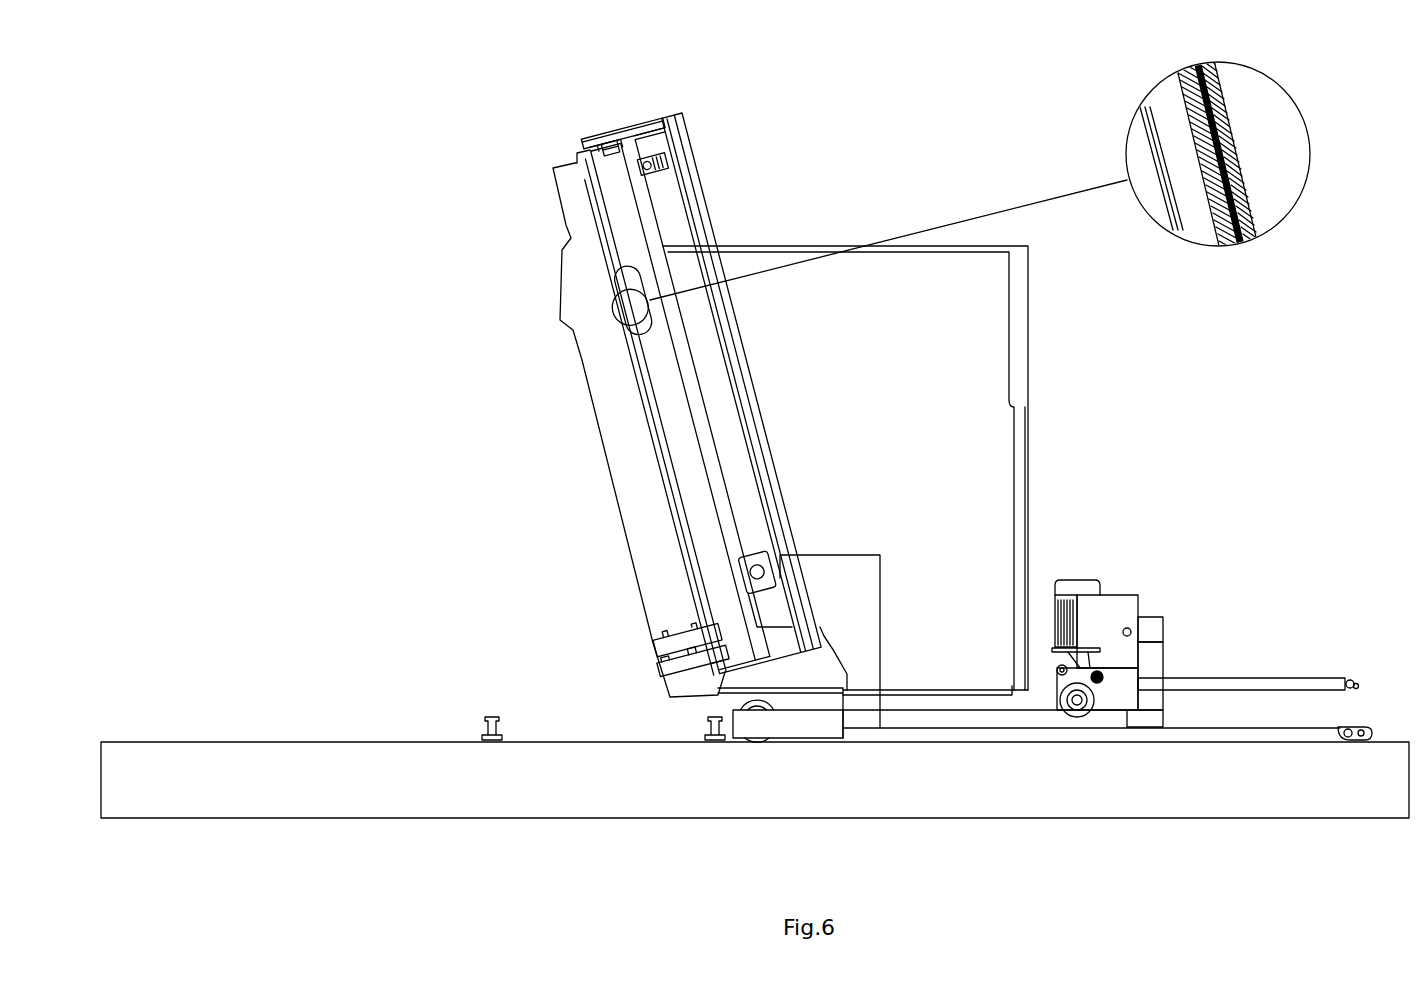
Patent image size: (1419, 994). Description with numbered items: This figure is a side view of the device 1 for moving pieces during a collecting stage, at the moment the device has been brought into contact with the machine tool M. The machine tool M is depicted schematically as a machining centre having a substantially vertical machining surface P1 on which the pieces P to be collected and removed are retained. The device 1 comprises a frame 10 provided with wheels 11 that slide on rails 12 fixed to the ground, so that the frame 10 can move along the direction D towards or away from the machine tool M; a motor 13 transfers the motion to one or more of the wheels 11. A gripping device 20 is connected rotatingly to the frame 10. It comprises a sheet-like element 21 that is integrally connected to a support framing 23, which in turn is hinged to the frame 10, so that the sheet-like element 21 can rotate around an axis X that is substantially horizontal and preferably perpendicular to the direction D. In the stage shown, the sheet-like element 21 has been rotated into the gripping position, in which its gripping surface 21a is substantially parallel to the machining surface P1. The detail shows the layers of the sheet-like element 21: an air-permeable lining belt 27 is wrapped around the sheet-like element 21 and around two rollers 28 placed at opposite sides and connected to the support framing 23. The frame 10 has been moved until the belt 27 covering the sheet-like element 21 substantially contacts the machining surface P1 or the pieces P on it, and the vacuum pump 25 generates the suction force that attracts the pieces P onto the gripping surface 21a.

The device for moving pieces 1 is at (1348, 368).
The frame 10 is at (1210, 637).
The rolling or sliding means 11 is at (740, 713).
The rails 12 is at (762, 738).
The motor 13 is at (1083, 580).
The gripping device 20 is at (776, 178).
The sheet-like element 21 is at (1210, 66).
The gripping surface 21a is at (1180, 75).
The support framing 23 is at (745, 378).
The vacuum pump 25 is at (1057, 668).
The lining belt 27 is at (1243, 238).
The rollers 28 is at (612, 160).
The pieces P is at (1228, 240).
The machining surface P1 is at (597, 158).
The machine tool M is at (620, 432).
The axis X is at (770, 570).
The movement direction D is at (1062, 785).